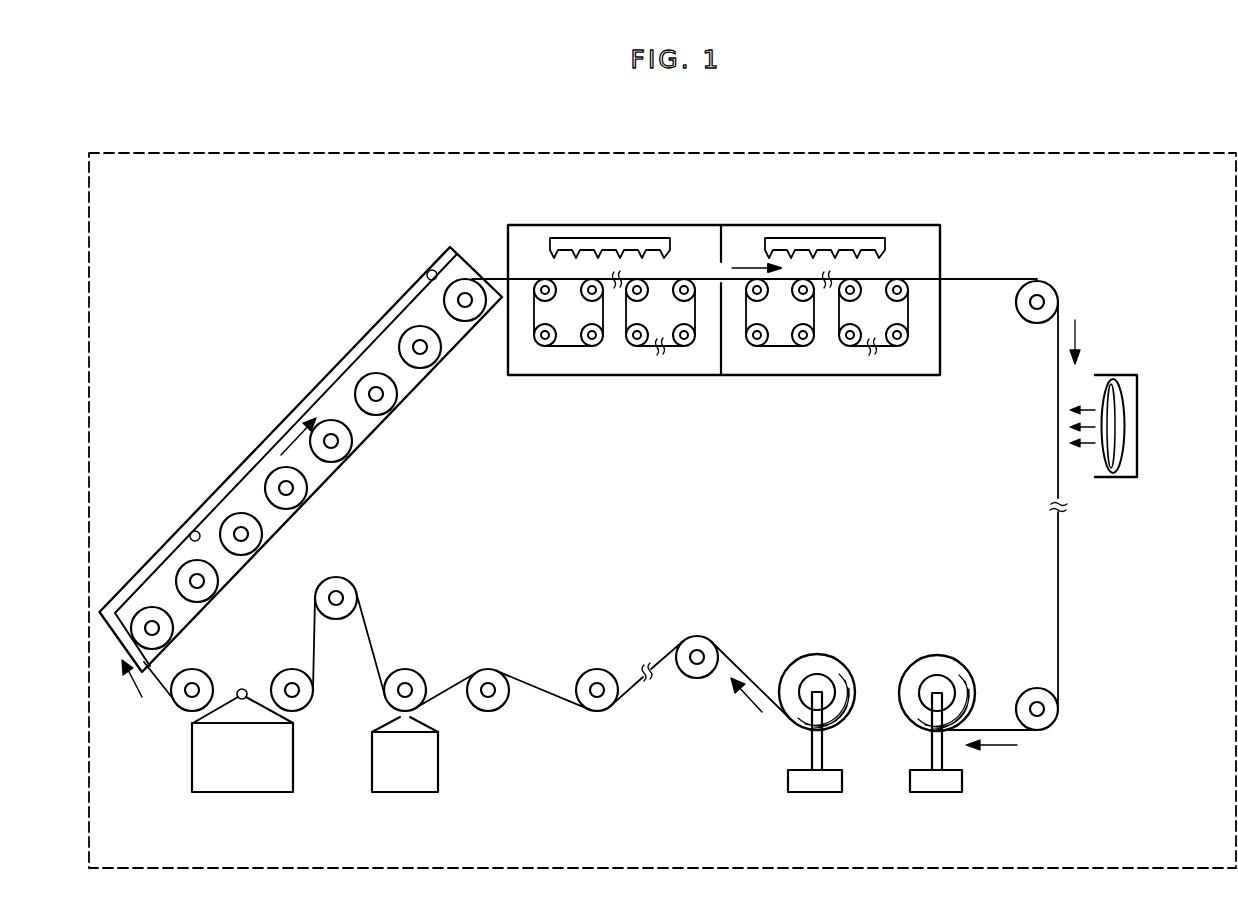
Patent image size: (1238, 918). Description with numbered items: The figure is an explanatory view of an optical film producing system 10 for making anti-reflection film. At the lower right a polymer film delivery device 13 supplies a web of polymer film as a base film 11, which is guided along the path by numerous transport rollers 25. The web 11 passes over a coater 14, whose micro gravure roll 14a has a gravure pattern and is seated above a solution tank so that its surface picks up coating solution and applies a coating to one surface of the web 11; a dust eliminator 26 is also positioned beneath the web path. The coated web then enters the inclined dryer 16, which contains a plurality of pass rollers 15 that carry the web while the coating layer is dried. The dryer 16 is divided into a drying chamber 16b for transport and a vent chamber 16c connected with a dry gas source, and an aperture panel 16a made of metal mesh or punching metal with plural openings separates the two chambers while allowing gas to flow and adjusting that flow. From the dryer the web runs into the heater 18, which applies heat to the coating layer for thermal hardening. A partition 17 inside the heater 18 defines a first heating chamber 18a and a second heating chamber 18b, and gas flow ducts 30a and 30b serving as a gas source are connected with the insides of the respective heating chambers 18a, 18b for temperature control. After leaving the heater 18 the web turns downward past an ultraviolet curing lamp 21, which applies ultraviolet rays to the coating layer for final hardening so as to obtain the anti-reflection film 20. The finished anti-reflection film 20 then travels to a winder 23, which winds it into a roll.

The optical film producing system 10 is at (950, 150).
The web of polymer film 11 is at (748, 678).
The polymer film delivery device 13 is at (817, 795).
The coater 14 is at (242, 739).
The micro gravure roll 14a is at (242, 688).
The pass rollers 15 is at (424, 350).
The dryer 16 is at (301, 448).
The aperture panel 16a is at (290, 432).
The drying chamber 16b is at (194, 531).
The vent chamber 16c is at (430, 270).
The partition 17 is at (723, 343).
The heater 18 is at (755, 310).
The first heating chamber 18a is at (614, 310).
The second heating chamber 18b is at (820, 310).
The anti-reflection film 20 is at (1058, 612).
The ultraviolet curing lamp 21 is at (1122, 480).
The winder 23 is at (937, 795).
The transport rollers 25 is at (187, 698).
The dust eliminator 26 is at (407, 796).
The gas flow duct 30a is at (617, 236).
The gas flow duct 30b is at (828, 236).